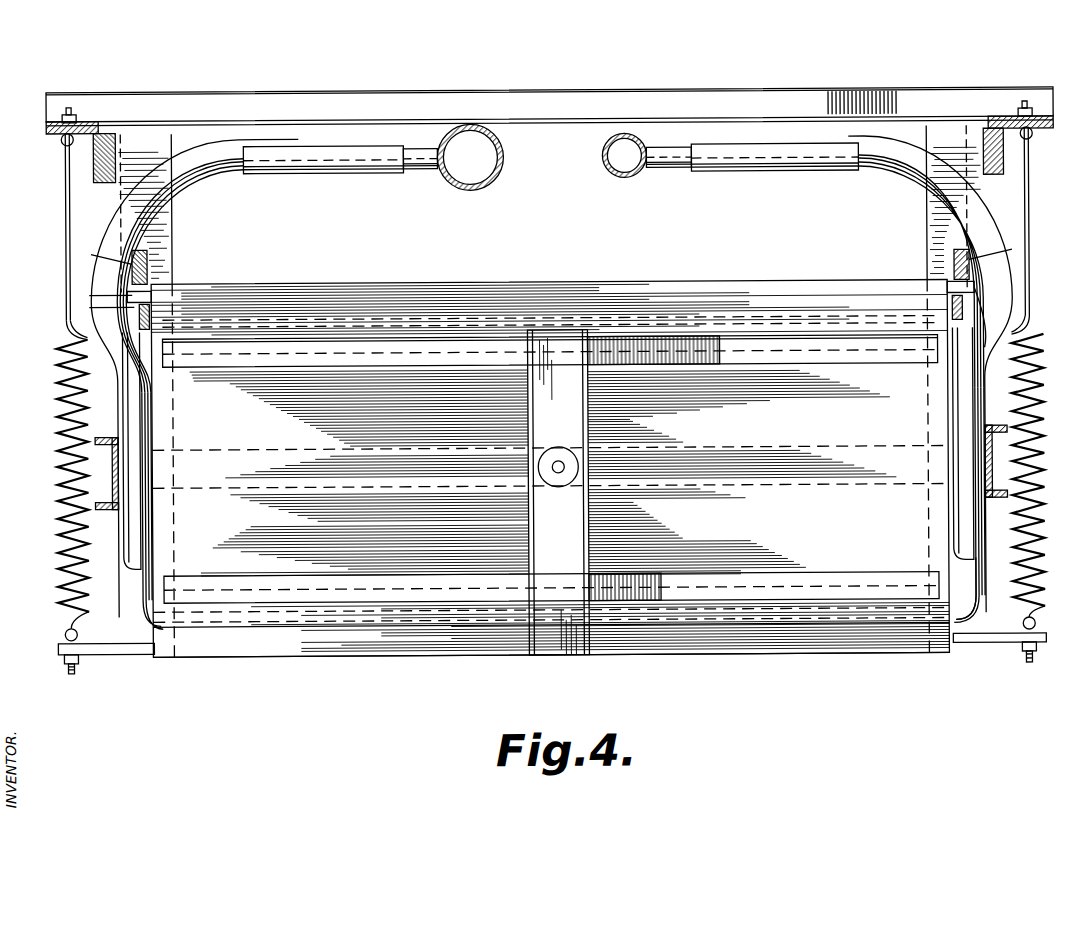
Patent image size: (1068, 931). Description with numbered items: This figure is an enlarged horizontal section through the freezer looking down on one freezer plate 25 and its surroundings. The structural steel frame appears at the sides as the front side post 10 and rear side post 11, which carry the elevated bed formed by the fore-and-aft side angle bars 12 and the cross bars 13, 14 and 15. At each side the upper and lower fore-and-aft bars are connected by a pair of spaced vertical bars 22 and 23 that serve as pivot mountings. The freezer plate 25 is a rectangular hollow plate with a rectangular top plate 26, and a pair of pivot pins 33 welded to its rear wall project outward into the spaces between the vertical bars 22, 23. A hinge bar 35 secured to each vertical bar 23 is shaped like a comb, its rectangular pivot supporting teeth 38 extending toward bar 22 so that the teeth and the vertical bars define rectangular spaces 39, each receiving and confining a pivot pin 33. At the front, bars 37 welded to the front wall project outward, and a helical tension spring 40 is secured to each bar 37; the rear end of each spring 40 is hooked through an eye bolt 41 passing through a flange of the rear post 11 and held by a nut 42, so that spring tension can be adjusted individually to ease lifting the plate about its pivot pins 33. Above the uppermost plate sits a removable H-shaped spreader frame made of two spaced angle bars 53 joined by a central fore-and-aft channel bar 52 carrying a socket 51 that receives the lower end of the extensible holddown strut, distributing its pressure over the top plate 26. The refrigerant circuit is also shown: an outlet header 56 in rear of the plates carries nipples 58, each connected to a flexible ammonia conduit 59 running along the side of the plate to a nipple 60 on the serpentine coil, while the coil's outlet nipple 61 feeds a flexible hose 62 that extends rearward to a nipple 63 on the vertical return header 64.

The front side post 10 is at (108, 504).
The rear side post 11 is at (48, 126).
The side angle bar 12 is at (170, 214).
The cross bar 13 is at (238, 620).
The cross bar 14 is at (202, 494).
The cross bar 15 is at (745, 314).
The vertical bar 22 is at (150, 305).
The vertical bar 23 is at (148, 268).
The freezer plate 25 is at (466, 662).
The top plate 26 is at (742, 472).
The pivot pin 33 is at (50, 297).
The hinge bar 35 is at (130, 262).
The bar 37 is at (130, 652).
The pivot supporting tooth 38 is at (52, 315).
The rectangular space 39 is at (56, 332).
The helical tension spring 40 is at (60, 396).
The eye bolt 41 is at (70, 112).
The nut 42 is at (62, 116).
The socket 51 is at (560, 452).
The channel bar 52 is at (558, 492).
The angle bar 53 is at (818, 357).
The outlet header 56 is at (614, 173).
The nipple 58 is at (670, 168).
The flexible ammonia conduit 59 is at (800, 172).
The nipple 60 is at (962, 628).
The outlet nipple 61 is at (135, 606).
The flexible hose 62 is at (290, 172).
The nipple 63 is at (422, 170).
The return header 64 is at (458, 189).